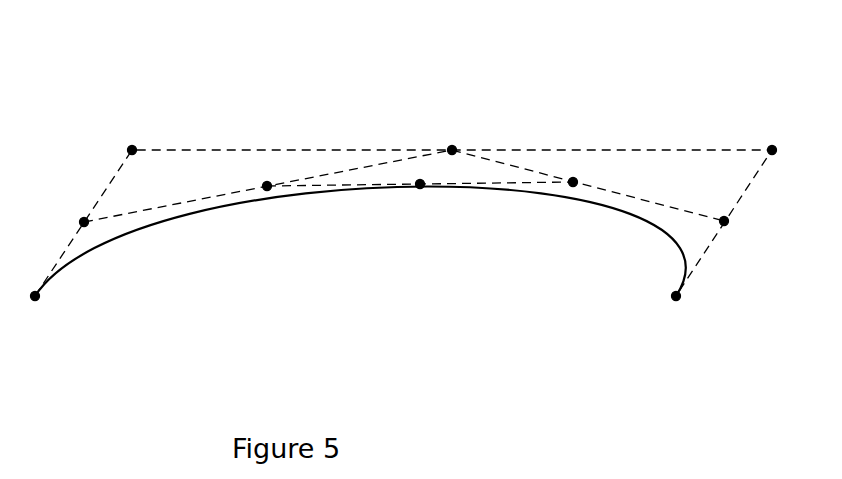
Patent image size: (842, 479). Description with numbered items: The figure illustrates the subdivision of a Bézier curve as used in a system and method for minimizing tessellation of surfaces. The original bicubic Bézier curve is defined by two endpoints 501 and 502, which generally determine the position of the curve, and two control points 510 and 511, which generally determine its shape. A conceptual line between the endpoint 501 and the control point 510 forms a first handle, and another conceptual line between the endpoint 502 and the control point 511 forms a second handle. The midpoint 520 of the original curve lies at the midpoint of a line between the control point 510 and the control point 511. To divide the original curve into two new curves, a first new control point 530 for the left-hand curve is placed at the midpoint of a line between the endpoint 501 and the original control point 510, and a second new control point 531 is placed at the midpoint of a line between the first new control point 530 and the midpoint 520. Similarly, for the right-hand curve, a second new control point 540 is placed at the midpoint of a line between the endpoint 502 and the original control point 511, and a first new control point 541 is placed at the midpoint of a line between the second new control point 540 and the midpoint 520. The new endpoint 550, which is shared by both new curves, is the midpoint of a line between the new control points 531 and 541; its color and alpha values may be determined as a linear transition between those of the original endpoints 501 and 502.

The endpoint 501 is at (37, 299).
The endpoint 502 is at (674, 299).
The control point 510 is at (134, 148).
The control point 511 is at (770, 148).
The midpoint 520 is at (454, 148).
The first new control point 530 is at (86, 220).
The second new control point 531 is at (269, 183).
The second new control point 540 is at (726, 224).
The first new control point 541 is at (575, 180).
The new endpoint 550 is at (418, 187).